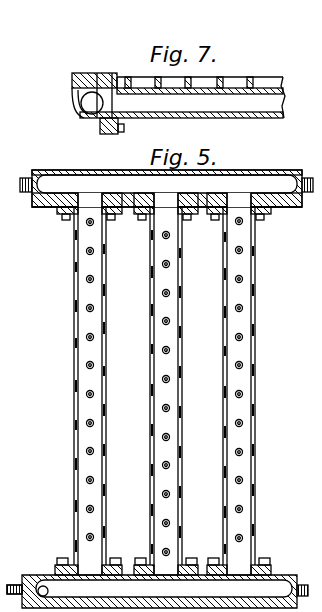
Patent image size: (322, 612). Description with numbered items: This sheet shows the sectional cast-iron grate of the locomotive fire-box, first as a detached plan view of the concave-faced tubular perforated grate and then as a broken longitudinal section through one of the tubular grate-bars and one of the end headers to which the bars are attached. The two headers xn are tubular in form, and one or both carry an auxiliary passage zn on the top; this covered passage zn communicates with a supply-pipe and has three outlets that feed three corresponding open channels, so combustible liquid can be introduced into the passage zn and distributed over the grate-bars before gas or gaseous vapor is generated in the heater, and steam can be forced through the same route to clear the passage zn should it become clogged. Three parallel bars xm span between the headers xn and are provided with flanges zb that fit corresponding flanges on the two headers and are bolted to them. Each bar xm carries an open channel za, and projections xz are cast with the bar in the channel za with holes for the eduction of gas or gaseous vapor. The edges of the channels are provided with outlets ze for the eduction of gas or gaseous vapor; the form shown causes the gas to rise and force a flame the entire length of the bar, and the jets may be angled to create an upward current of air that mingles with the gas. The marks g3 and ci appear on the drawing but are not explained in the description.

In FIG. 7, the auxiliary passage zn is at (80, 84).
In FIG. 5, the auxiliary passage zn is at (160, 389).
In FIG. 7, the channel za is at (188, 73).
In FIG. 5, the channel za is at (87, 278).
In FIG. 7, the flange zb is at (111, 133).
In FIG. 5, the flange zb is at (169, 557).
In FIG. 5, the outlet ze is at (175, 386).
In FIG. 7, the header xn is at (76, 103).
In FIG. 5, the header xn is at (167, 206).
In FIG. 7, the bar xm is at (181, 110).
In FIG. 5, the bar xm is at (157, 384).
In FIG. 7, the projection xz is at (201, 90).
In FIG. 5, the projection xz is at (155, 392).
In FIG. 5, the top strip g3 is at (167, 164).
In FIG. 5, the stub ci is at (11, 597).